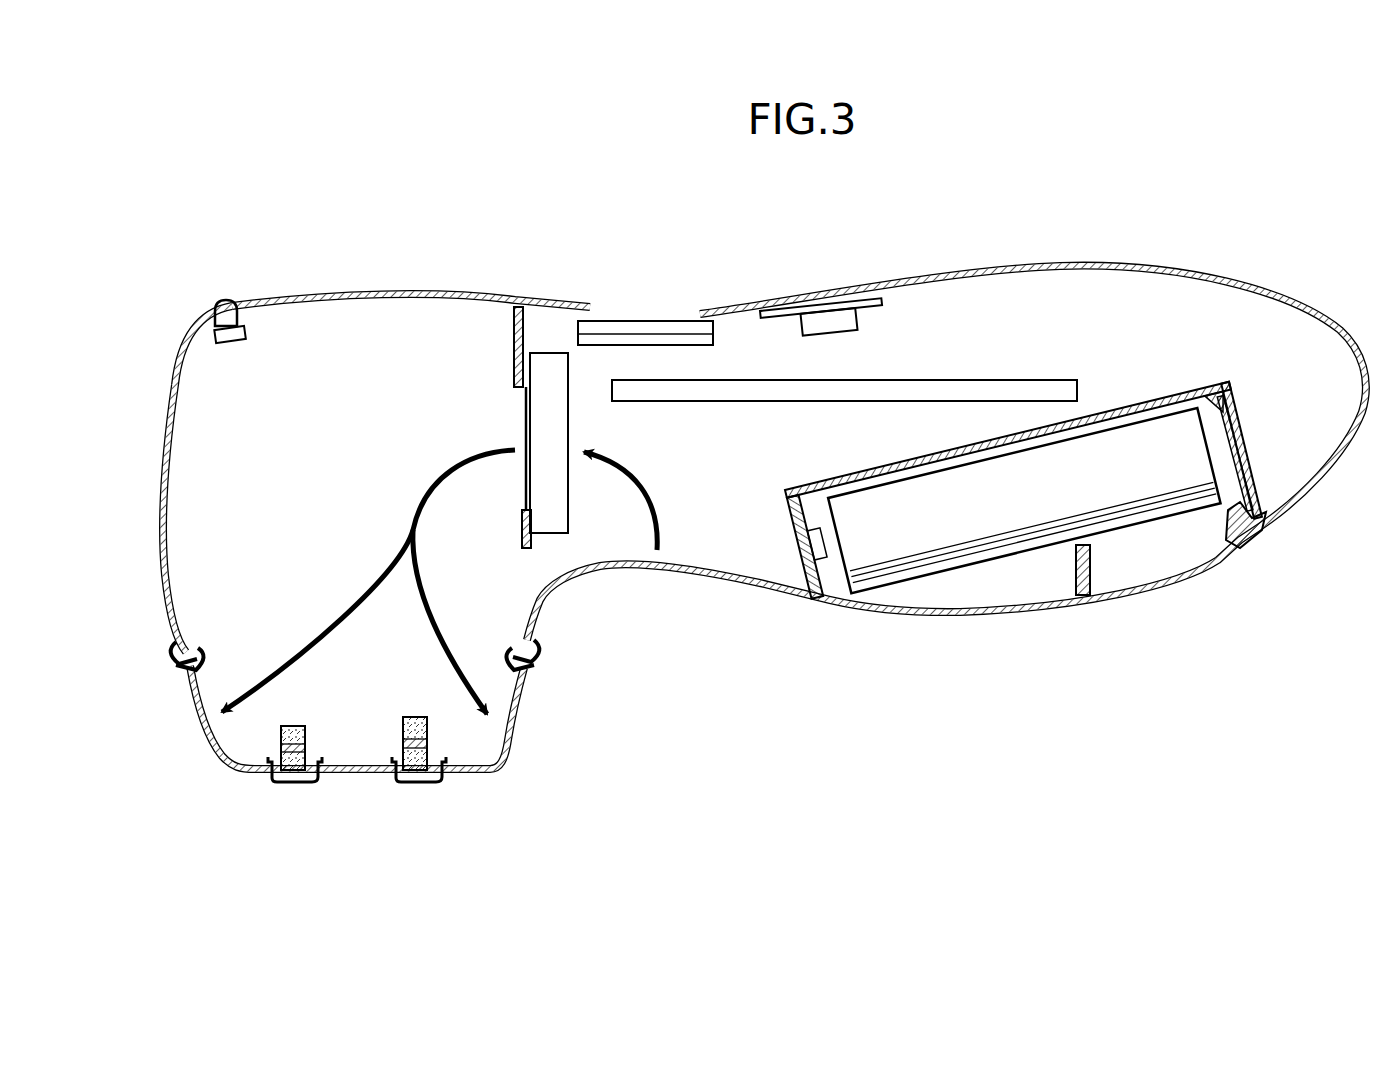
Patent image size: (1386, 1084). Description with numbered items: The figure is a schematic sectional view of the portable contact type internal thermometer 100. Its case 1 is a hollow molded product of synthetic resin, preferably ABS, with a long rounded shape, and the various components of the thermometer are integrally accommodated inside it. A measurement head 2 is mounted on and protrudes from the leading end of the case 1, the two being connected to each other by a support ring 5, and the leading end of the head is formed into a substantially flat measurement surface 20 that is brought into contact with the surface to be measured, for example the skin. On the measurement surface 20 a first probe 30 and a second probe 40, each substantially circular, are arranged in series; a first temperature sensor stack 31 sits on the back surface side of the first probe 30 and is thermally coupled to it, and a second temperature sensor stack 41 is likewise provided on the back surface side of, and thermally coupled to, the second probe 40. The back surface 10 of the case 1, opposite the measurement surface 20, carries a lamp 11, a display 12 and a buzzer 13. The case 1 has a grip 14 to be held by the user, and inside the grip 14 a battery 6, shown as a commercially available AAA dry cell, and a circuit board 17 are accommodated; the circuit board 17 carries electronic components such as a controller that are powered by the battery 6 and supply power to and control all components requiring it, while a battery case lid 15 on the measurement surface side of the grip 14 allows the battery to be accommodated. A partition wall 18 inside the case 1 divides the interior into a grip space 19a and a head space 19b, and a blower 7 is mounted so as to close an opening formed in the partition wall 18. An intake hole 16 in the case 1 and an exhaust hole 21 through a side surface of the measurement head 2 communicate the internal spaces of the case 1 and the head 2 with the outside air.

The case 1 is at (162, 408).
The measurement head 2 is at (190, 682).
The support ring 5 is at (176, 656).
The battery 6 is at (1164, 492).
The blower 7 is at (552, 362).
The back surface 10 is at (998, 264).
The lamp 11 is at (222, 299).
The display 12 is at (646, 322).
The buzzer 13 is at (880, 318).
The grip 14 is at (736, 592).
The battery case lid 15 is at (978, 614).
The intake hole 16 is at (704, 588).
The circuit board 17 is at (1032, 380).
The partition wall 18 is at (515, 352).
The grip space 19a is at (748, 482).
The head space 19b is at (274, 495).
The measurement surface 20 is at (362, 772).
The exhaust hole 21 is at (206, 718).
The first probe 30 is at (292, 772).
The first temperature sensor stack 31 is at (268, 737).
The second probe 40 is at (416, 772).
The second temperature sensor stack 41 is at (438, 737).
The contact type internal thermometer 100 is at (940, 812).